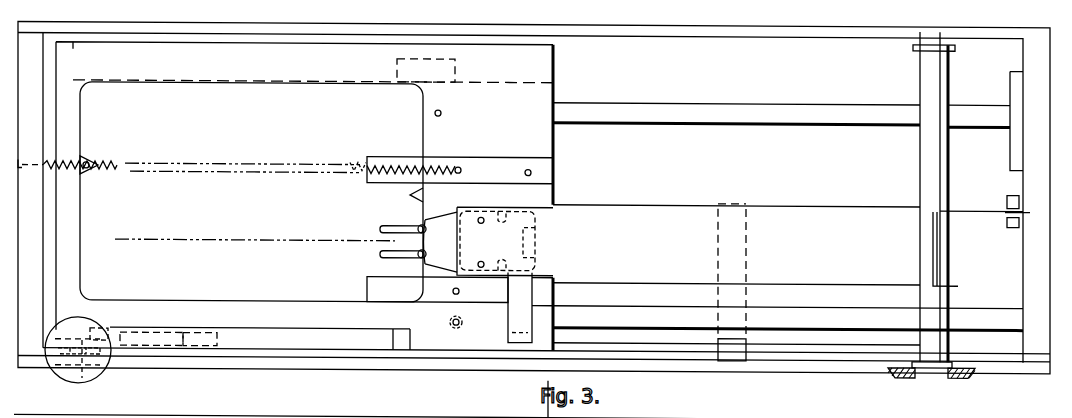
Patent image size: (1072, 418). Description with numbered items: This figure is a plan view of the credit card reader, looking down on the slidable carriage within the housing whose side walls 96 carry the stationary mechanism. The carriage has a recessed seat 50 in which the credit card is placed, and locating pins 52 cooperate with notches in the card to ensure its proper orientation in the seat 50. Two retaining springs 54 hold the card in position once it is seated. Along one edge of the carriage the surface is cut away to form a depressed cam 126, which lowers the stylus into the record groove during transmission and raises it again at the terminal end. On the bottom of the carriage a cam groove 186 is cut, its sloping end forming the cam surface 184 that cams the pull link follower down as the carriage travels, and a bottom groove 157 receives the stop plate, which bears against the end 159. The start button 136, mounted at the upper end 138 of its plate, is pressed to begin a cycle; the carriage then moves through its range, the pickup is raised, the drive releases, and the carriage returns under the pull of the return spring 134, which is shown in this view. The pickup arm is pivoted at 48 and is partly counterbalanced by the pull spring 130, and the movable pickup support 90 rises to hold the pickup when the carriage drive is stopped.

The side walls 96 is at (326, 22).
The seat 50 is at (320, 90).
The locating pins 52 is at (88, 157).
The retaining springs 54 is at (480, 172).
The return spring 134 is at (118, 163).
The sloping cam surface 184 is at (438, 68).
The cam groove 186 is at (518, 68).
The depressed cam 126 is at (250, 345).
The start button 136 is at (55, 380).
The upper end of plate 138 is at (90, 378).
The end 159 is at (143, 348).
The bottom groove 157 is at (190, 348).
The pickup support 90 is at (728, 352).
The pivot 48 is at (937, 296).
The pull spring 130 is at (1005, 198).